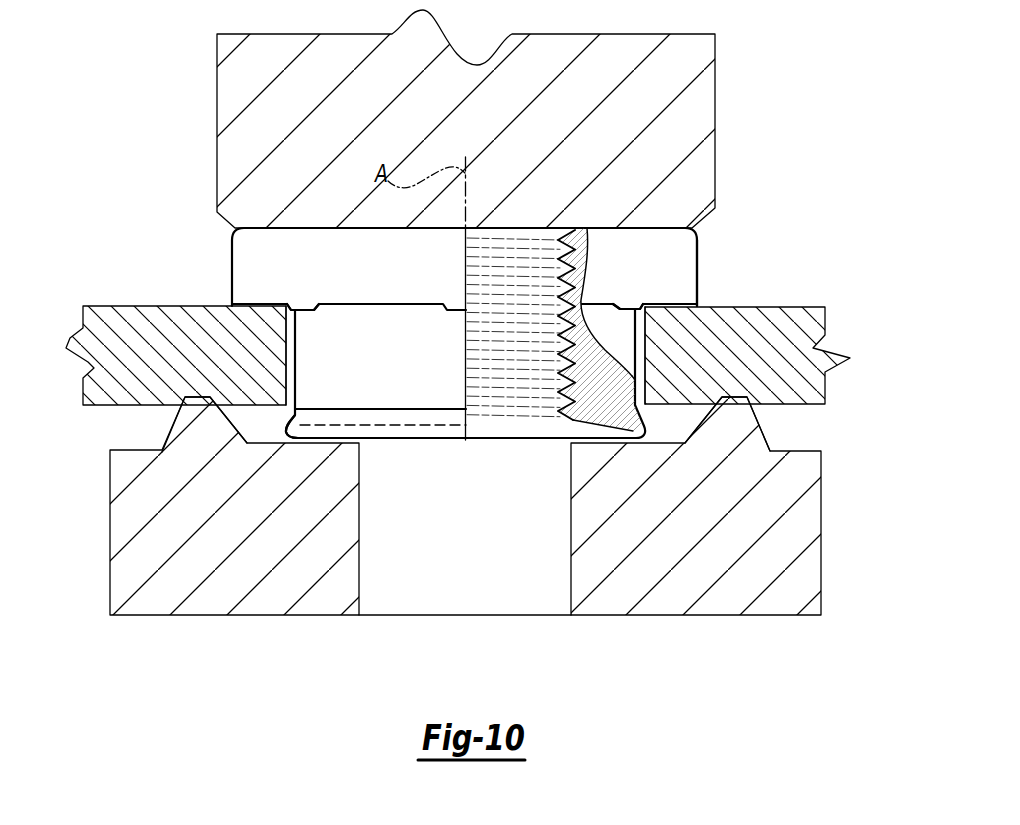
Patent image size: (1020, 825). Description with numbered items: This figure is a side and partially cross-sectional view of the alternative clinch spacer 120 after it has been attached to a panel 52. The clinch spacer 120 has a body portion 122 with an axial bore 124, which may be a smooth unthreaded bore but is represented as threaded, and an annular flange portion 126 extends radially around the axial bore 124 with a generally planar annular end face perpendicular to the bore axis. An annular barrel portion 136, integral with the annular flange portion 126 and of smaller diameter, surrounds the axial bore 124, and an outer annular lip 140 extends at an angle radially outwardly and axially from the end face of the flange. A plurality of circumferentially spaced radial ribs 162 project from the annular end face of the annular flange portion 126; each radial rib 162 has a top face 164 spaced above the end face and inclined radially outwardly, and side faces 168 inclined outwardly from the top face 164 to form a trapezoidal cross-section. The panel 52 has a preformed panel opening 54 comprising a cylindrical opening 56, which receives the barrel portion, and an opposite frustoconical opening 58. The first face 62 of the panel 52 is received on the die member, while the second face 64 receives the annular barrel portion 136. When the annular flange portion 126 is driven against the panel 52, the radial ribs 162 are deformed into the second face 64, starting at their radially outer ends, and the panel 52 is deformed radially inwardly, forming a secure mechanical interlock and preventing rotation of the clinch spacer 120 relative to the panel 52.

The panel 52 is at (818, 410).
The panel opening 54 is at (640, 360).
The cylindrical opening 56 is at (287, 353).
The frustoconical opening 58 is at (640, 326).
The first face 62 is at (122, 406).
The second face 64 is at (745, 312).
The clinch spacer 120 is at (384, 294).
The body portion 122 is at (616, 270).
The axial bore 124 is at (568, 412).
The annular flange portion 126 is at (229, 272).
The annular barrel portion 136 is at (294, 403).
The outer annular lip 140 is at (318, 425).
The radial ribs 162 is at (308, 304).
The top face 164 is at (285, 302).
The side faces 168 is at (696, 304).